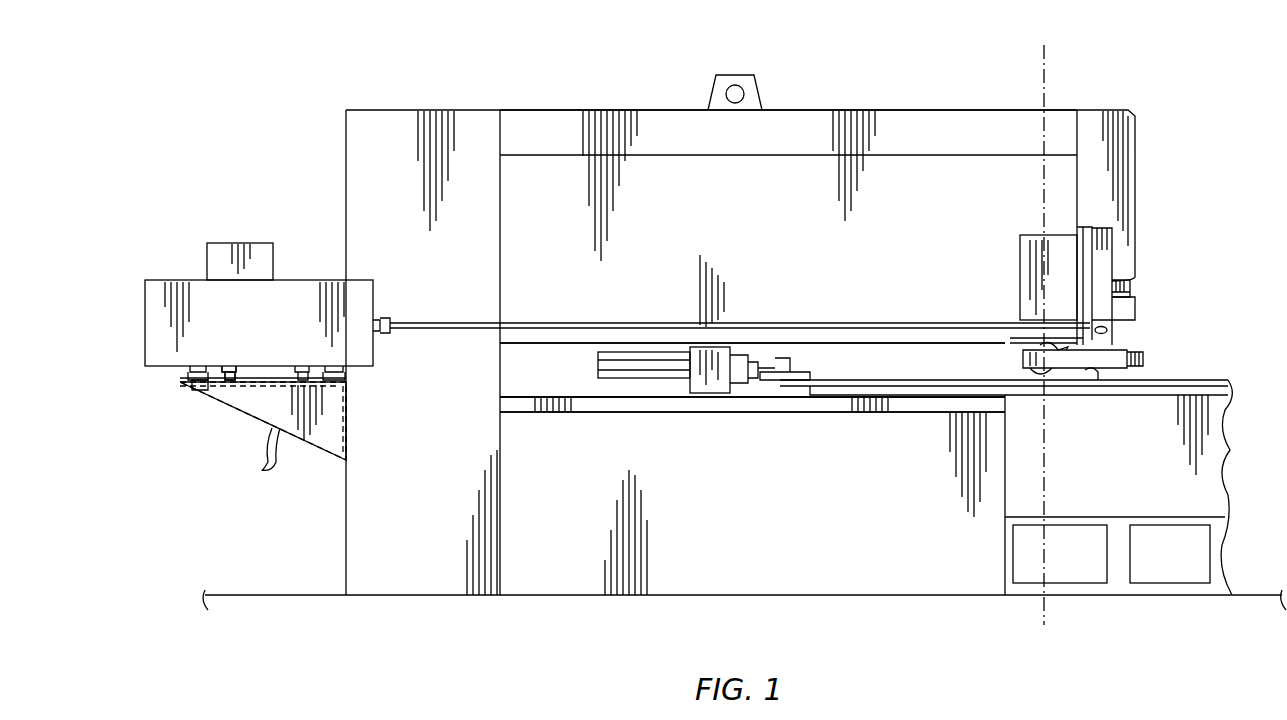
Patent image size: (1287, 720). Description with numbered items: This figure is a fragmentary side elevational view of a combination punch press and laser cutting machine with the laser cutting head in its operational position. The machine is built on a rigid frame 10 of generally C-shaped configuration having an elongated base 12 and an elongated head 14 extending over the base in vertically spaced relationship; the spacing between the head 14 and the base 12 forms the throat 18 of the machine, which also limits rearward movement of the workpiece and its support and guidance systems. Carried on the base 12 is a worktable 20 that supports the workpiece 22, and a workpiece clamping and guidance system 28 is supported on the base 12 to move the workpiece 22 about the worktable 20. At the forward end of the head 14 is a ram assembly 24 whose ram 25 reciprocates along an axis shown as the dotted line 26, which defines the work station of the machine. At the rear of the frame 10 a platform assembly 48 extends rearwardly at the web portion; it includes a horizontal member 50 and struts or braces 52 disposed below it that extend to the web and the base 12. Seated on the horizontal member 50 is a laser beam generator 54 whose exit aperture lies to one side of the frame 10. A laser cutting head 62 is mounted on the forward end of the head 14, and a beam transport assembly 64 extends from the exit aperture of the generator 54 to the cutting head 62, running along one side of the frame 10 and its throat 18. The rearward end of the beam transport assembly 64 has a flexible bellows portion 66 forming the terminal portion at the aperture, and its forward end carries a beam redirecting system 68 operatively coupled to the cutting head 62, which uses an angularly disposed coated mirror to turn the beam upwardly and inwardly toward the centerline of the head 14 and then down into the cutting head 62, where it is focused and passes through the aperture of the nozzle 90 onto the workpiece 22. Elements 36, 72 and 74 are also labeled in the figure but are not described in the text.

The frame 10 is at (893, 110).
The base 12 is at (855, 560).
The head 14 is at (804, 110).
The throat 18 is at (553, 376).
The worktable 20 is at (695, 413).
The workpiece 22 is at (1165, 385).
The ram assembly 24 is at (1062, 275).
The ram 25 is at (1012, 350).
The axis of reciprocation 26 is at (1037, 57).
The workpiece clamping and guidance system 28 is at (715, 365).
The slide 36 is at (1050, 370).
The platform assembly 48 is at (240, 425).
The horizontal member 50 is at (180, 382).
The struts or braces 52 is at (262, 408).
The laser beam generator 54 is at (145, 315).
The laser cutting head 62 is at (1130, 290).
The beam transport assembly 64 is at (880, 323).
The flexible bellows portion 66 is at (385, 320).
The beam redirecting system 68 is at (1100, 308).
The switch 72 is at (200, 392).
The foot 74 is at (230, 376).
The nozzle 90 is at (1090, 372).